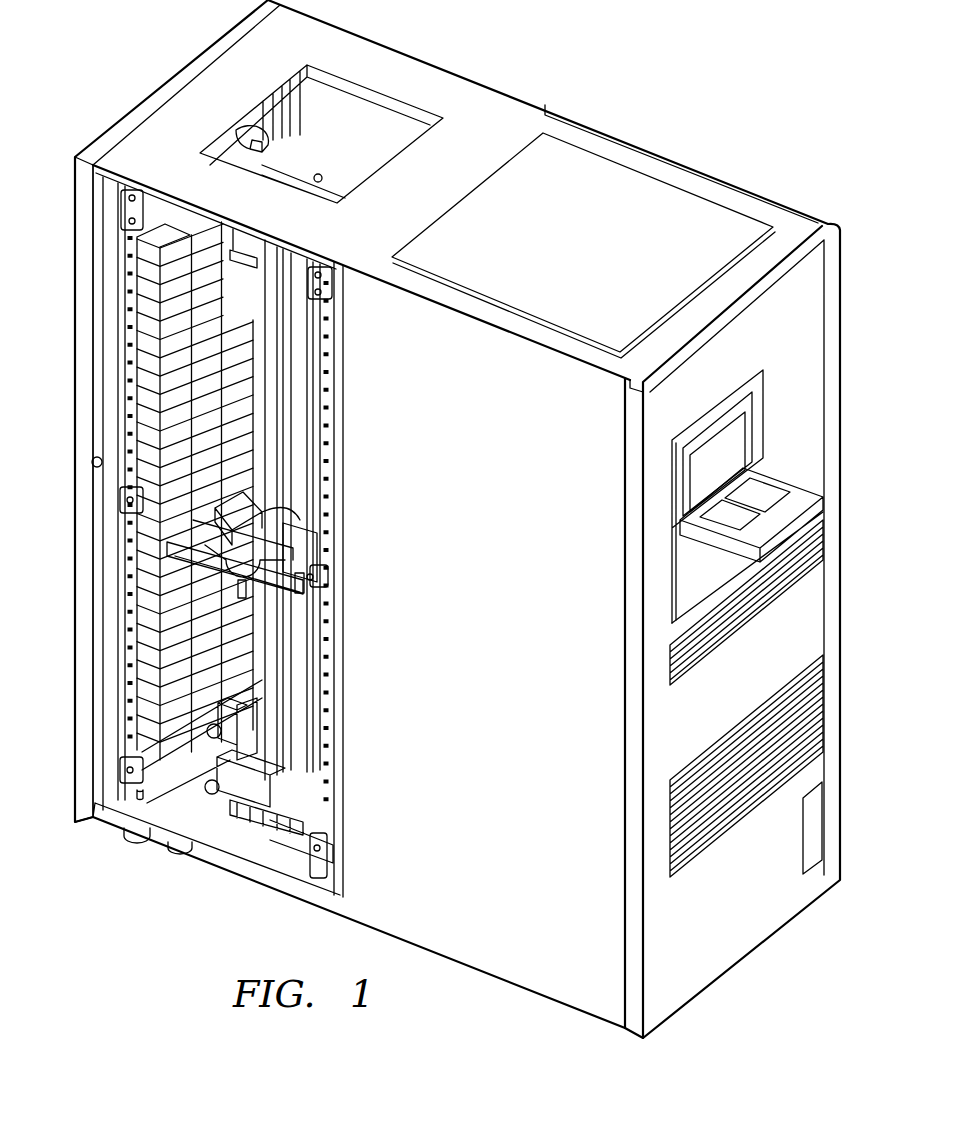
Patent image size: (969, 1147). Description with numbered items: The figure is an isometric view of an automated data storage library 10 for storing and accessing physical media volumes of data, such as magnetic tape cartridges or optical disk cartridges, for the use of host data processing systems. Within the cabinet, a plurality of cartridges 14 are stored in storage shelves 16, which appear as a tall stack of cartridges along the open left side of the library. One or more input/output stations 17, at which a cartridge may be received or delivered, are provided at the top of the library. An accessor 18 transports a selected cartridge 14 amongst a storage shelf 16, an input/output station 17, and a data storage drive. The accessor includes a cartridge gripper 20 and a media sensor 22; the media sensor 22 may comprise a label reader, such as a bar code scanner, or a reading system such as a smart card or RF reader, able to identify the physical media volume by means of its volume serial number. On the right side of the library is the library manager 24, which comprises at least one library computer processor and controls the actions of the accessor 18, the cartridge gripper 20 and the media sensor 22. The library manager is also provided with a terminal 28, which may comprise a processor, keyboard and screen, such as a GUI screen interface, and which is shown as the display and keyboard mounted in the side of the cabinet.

The automated data storage library 10 is at (499, 105).
The physical media volumes (cartridges) 14 is at (155, 286).
The storage shelves 16 is at (84, 455).
The input/output station 17 is at (244, 129).
The accessor 18 is at (237, 770).
The cartridge gripper 20 is at (303, 598).
The media sensor 22 is at (250, 510).
The library manager 24 is at (817, 411).
The terminal 28 is at (805, 505).